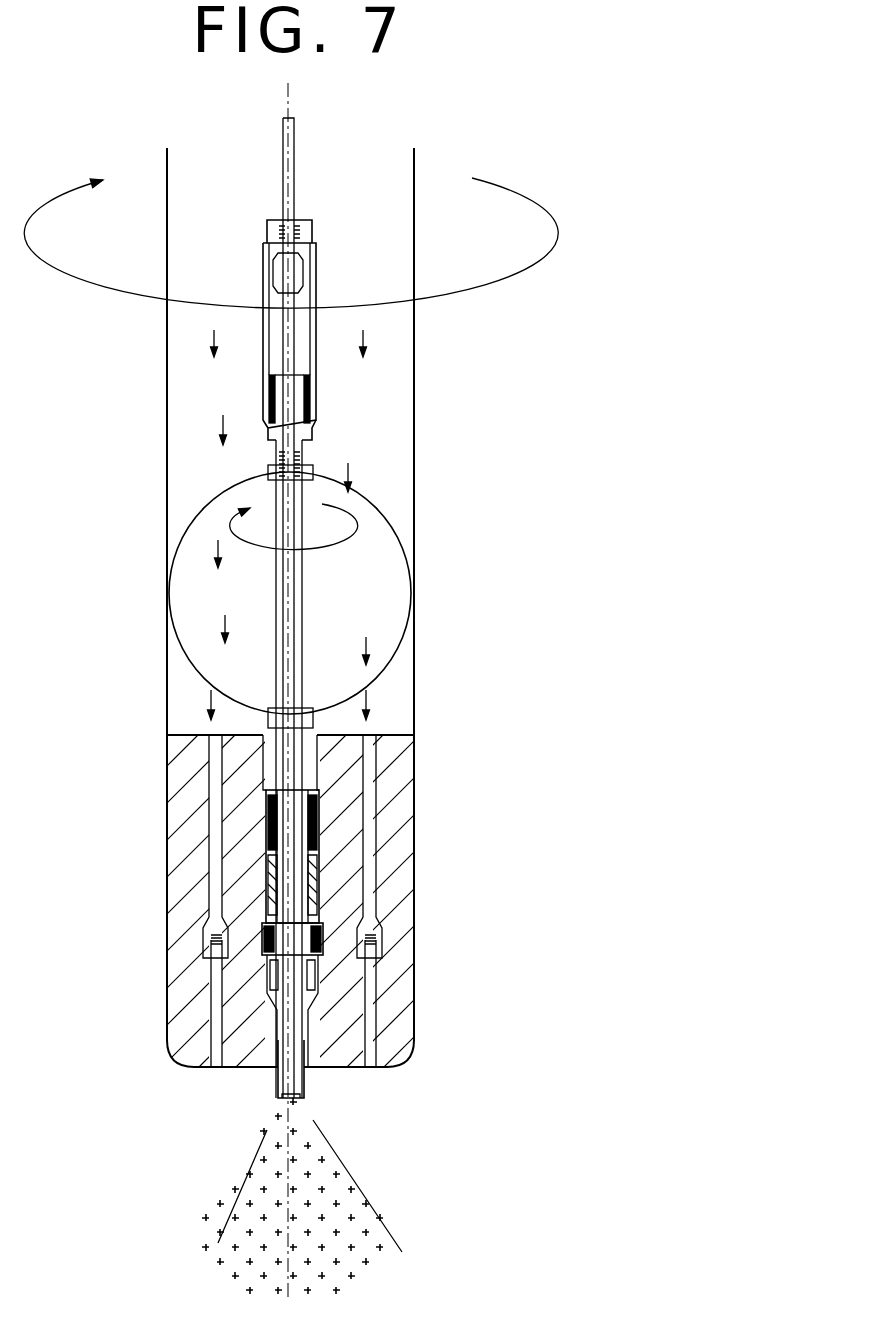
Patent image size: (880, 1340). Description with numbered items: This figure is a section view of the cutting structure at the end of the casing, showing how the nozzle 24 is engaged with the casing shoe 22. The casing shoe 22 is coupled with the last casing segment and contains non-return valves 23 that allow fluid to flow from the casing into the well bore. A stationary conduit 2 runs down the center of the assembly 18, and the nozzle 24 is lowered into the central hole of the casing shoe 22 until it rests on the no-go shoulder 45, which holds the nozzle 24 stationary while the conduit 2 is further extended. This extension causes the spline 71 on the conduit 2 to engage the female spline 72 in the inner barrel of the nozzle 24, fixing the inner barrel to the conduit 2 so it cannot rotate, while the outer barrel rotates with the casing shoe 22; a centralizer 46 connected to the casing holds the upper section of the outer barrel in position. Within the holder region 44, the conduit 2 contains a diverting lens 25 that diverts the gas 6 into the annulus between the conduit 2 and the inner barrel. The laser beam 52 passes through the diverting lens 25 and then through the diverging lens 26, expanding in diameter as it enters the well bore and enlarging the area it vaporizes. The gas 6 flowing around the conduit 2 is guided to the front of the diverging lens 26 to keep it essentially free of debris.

The conduit 2 is at (300, 154).
The spline 71 is at (326, 265).
The female spline 72 is at (312, 385).
The diverting lens 25 is at (330, 505).
The centralizer 46 is at (400, 540).
The nozzle unit 18 is at (548, 628).
The nozzle holder 44 is at (268, 810).
The nozzle 24 is at (320, 790).
The non-return valve 23 is at (375, 912).
The no-go shoulder 45 is at (265, 963).
The casing shoe 22 is at (414, 1019).
The diverging lens 26 is at (290, 1098).
The laser beam 52 is at (340, 1148).
The gas 6 is at (310, 1248).